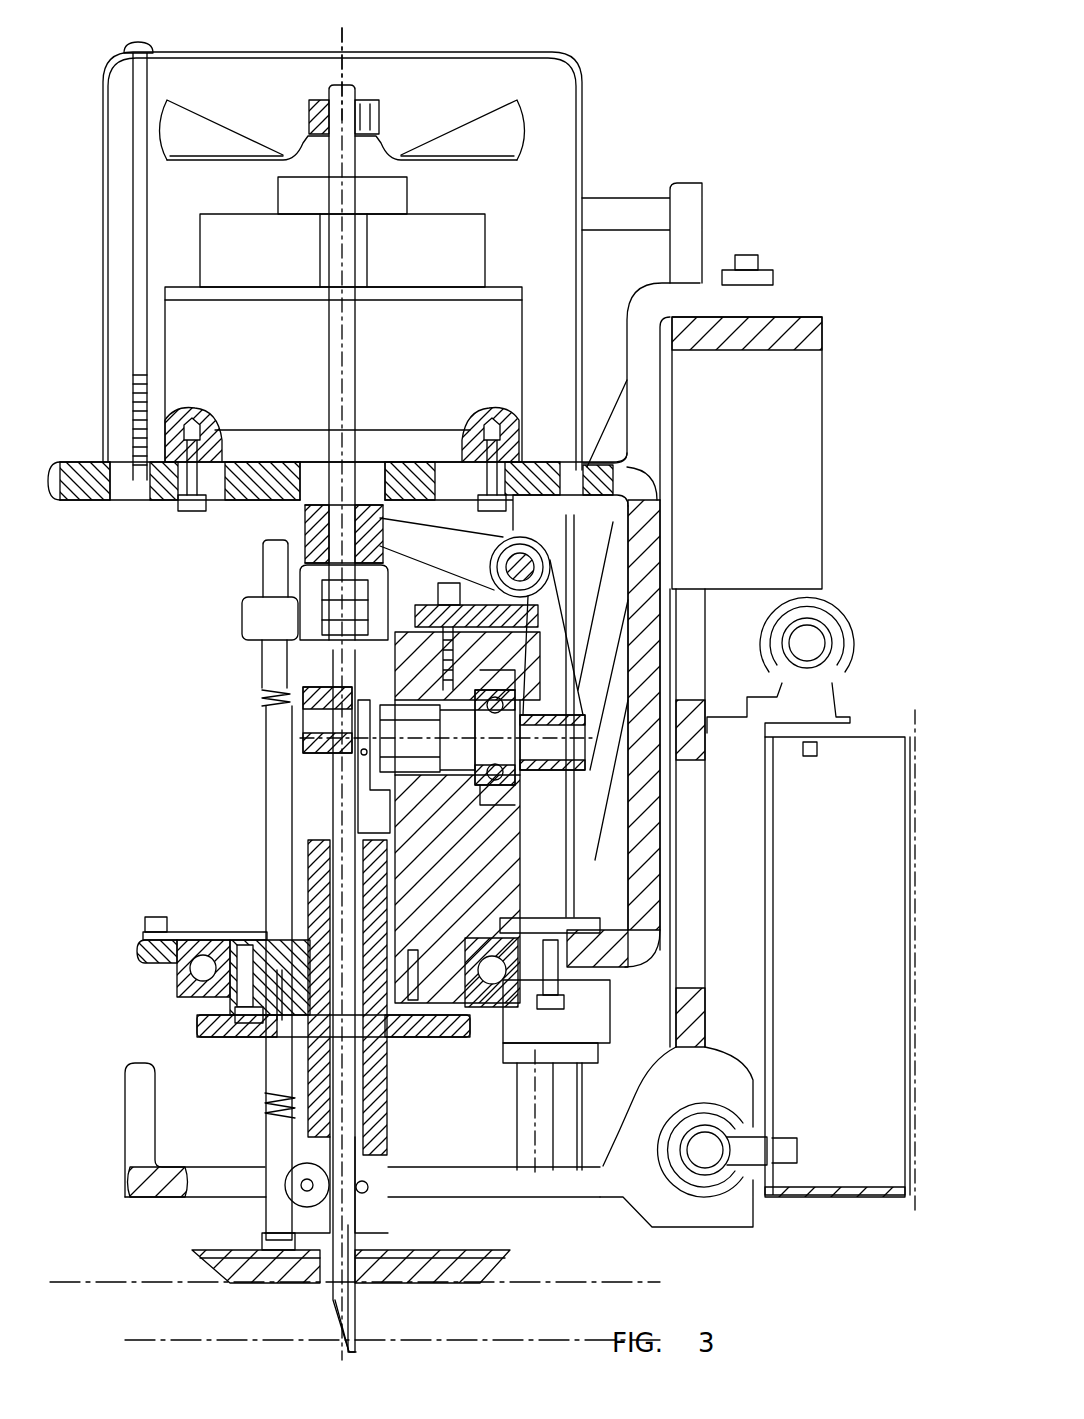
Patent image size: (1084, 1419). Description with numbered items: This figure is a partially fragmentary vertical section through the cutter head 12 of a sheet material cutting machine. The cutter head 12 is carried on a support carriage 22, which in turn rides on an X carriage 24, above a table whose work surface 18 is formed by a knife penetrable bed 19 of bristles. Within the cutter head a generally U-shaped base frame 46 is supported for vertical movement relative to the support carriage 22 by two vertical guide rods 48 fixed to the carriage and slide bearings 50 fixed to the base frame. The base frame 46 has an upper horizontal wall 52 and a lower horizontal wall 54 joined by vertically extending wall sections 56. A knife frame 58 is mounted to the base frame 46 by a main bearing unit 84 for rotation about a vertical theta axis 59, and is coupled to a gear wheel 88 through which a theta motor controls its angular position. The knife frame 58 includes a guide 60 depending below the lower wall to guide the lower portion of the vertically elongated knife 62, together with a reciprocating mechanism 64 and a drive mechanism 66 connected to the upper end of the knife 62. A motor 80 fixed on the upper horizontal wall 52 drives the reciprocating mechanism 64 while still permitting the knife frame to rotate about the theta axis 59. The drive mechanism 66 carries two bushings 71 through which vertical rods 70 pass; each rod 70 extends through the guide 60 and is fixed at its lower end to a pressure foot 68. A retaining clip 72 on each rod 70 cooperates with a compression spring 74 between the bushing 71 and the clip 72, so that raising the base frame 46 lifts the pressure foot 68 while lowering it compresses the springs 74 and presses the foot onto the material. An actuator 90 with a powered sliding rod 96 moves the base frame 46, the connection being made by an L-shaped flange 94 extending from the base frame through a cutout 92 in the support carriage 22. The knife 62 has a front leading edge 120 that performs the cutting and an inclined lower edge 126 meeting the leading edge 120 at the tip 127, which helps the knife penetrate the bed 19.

The cutter head 12 is at (618, 132).
The work surface 18 is at (118, 1282).
The knife penetrable bed 19 is at (155, 1310).
The support carriage 22 is at (708, 1005).
The X carriage 24 is at (810, 1205).
The base frame 46 is at (648, 950).
The vertical guide rod 48 is at (568, 1108).
The slide bearing 50 is at (610, 1010).
The upper horizontal wall 52 is at (580, 500).
The lower horizontal wall 54 is at (615, 930).
The vertical wall section 56 is at (625, 815).
The knife frame 58 is at (505, 840).
The theta axis 59 is at (344, 36).
The guide 60 is at (387, 1118).
The knife 62 is at (335, 1302).
The reciprocating mechanism 64 is at (300, 788).
The drive mechanism 66 is at (572, 650).
The pressure foot 68 is at (425, 1250).
The rod 70 is at (270, 778).
The bushing 71 is at (252, 597).
The retaining clip 72 is at (265, 1106).
The compression spring 74 is at (262, 700).
The motor 80 is at (508, 350).
The main bearing unit 84 is at (177, 994).
The gear wheel 88 is at (197, 1030).
The actuator 90 is at (800, 530).
The cutout 92 is at (690, 222).
The L-shaped flange 94 is at (650, 310).
The sliding rod 96 is at (748, 255).
The leading edge 120 is at (355, 1305).
The inclined lower edge 126 is at (340, 1335).
The tip 127 is at (356, 1355).